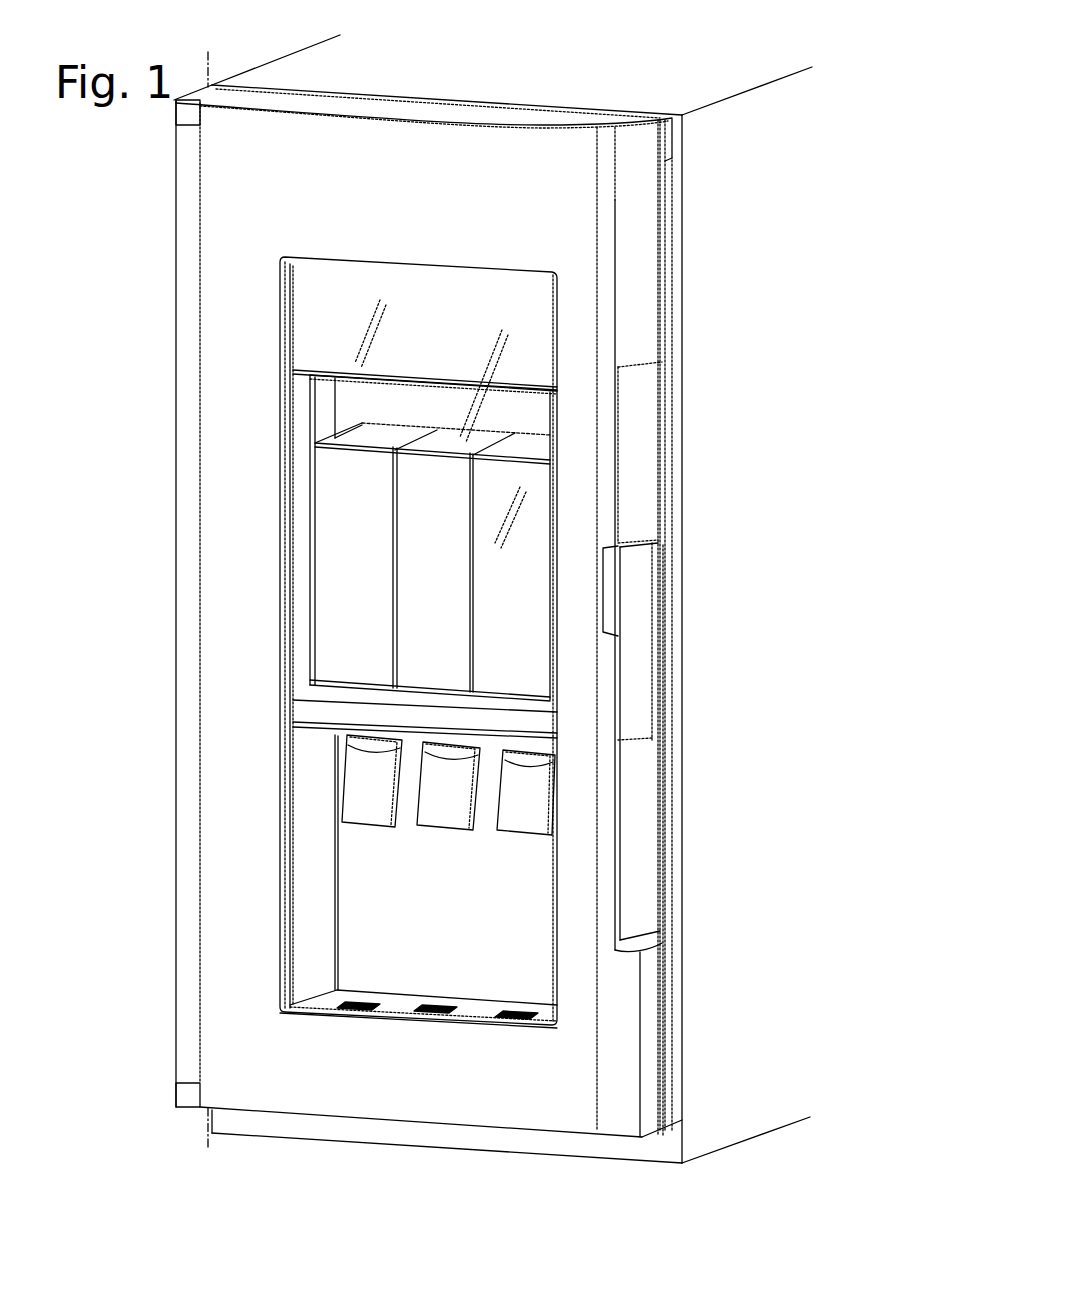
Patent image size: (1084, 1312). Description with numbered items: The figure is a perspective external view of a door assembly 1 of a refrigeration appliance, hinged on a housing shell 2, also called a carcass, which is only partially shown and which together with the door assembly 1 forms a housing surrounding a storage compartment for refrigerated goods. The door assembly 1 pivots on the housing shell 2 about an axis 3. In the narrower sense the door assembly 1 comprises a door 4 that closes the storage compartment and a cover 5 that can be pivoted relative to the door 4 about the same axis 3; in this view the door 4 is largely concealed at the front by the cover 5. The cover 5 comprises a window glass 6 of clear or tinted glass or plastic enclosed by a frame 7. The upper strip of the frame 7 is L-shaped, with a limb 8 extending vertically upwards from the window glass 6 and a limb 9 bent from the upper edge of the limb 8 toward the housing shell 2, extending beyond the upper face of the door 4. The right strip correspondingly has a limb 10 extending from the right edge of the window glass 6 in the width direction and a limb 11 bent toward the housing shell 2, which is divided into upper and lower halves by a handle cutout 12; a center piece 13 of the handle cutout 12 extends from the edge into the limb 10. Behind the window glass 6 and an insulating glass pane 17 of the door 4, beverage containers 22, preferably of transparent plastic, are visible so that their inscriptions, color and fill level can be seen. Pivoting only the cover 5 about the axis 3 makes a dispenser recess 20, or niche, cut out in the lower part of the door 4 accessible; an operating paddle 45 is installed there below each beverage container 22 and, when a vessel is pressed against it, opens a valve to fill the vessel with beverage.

The door assembly 1 is at (147, 286).
The housing shell 2 is at (746, 186).
The axis 3 is at (208, 68).
The door 4 is at (673, 297).
The cover 5 is at (203, 165).
The window glass 6 is at (313, 342).
The frame 7 is at (235, 384).
The limb 8 is at (350, 168).
The limb 9 is at (383, 107).
The limb 10 is at (582, 387).
The limb 11 is at (623, 333).
The handle cutout 12 is at (640, 830).
The center piece 13 is at (610, 588).
The insulating glass pane 17 is at (325, 398).
The dispenser recess 20 is at (370, 915).
The beverage containers 22 is at (503, 567).
The operating paddle 45 is at (381, 806).